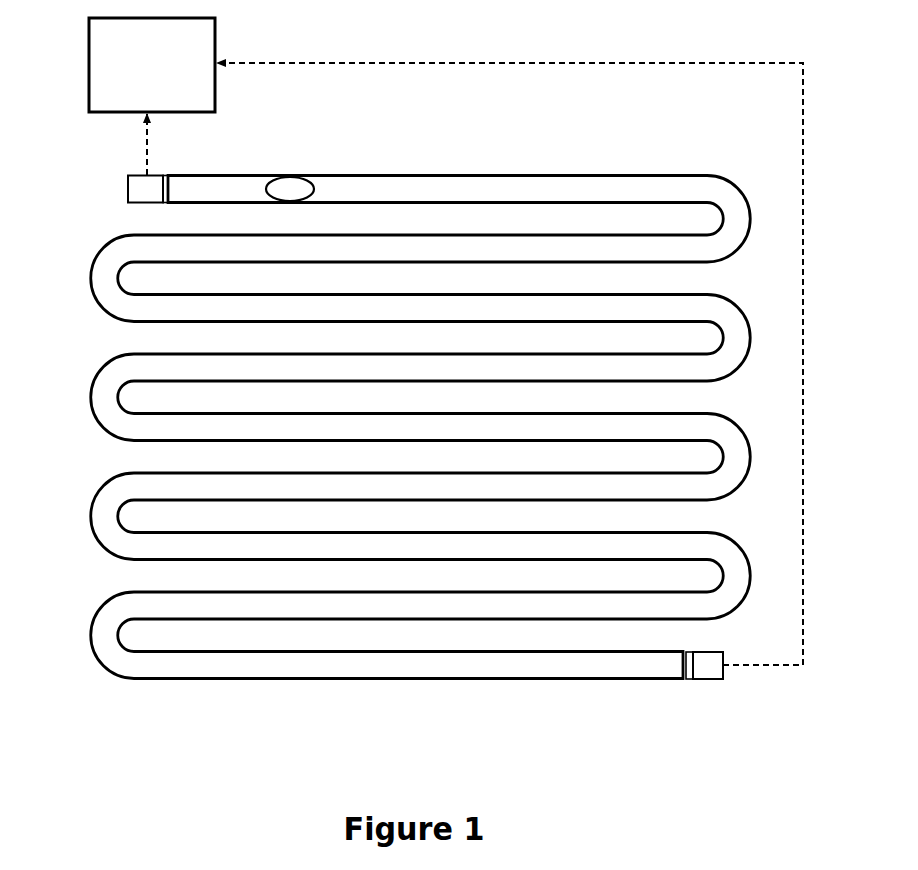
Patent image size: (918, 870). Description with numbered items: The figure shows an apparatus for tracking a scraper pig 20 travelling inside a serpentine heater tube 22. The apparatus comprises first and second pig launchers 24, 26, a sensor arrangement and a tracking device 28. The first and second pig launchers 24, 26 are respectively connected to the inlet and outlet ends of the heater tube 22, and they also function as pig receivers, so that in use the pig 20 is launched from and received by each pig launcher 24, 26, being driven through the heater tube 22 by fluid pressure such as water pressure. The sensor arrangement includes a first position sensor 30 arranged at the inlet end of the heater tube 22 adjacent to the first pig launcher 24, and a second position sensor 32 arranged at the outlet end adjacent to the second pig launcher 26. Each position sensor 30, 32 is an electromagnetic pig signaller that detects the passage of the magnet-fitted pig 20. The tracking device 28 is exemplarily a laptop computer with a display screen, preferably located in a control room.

The scraper pig 20 is at (296, 184).
The serpentine heater tube 22 is at (599, 170).
The first pig launcher 24 is at (127, 186).
The second pig launcher 26 is at (716, 683).
The tracking device 28 is at (172, 80).
The first position sensor 30 is at (171, 172).
The second position sensor 32 is at (690, 682).